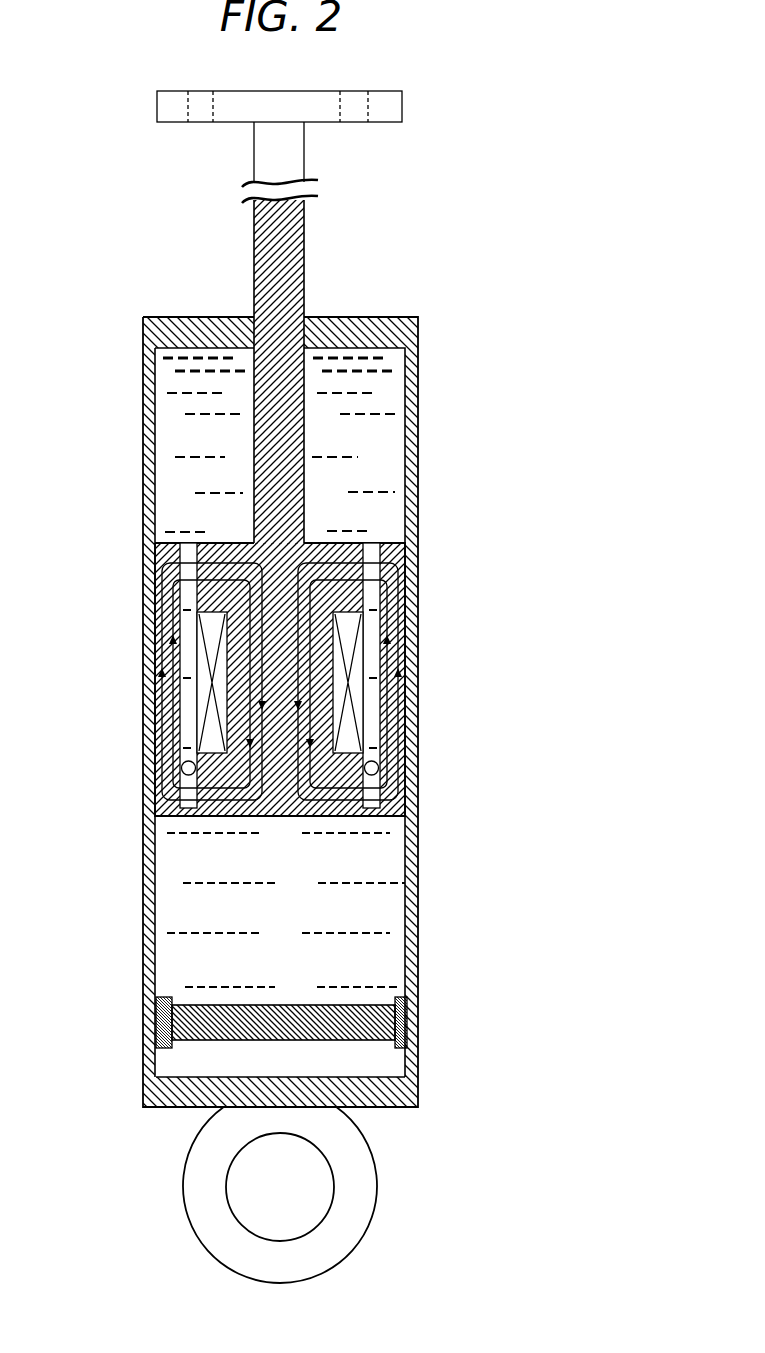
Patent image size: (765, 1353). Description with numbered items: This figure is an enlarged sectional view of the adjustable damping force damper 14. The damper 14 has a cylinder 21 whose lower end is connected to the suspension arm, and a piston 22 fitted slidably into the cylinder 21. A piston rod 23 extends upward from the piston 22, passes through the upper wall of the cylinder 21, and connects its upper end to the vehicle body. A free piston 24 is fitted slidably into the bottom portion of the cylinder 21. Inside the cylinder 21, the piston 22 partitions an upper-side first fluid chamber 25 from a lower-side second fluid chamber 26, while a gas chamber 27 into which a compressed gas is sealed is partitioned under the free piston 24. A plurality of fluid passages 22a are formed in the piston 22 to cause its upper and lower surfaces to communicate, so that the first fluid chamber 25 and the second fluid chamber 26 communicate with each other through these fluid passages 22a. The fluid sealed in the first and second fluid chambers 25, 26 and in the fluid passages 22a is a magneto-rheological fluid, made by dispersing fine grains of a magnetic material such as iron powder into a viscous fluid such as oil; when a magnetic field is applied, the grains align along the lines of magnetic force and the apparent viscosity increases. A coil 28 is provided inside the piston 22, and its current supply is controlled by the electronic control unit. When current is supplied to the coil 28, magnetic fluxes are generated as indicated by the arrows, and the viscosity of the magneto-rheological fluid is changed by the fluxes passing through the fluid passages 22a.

The damper 14 is at (302, 687).
The cylinder 21 is at (420, 463).
The piston 22 is at (287, 640).
The fluid passages 22a is at (181, 773).
The piston rod 23 is at (263, 430).
The free piston 24 is at (300, 1018).
The first fluid chamber 25 is at (377, 446).
The second fluid chamber 26 is at (299, 923).
The gas chamber 27 is at (301, 1072).
The coil 28 is at (213, 627).